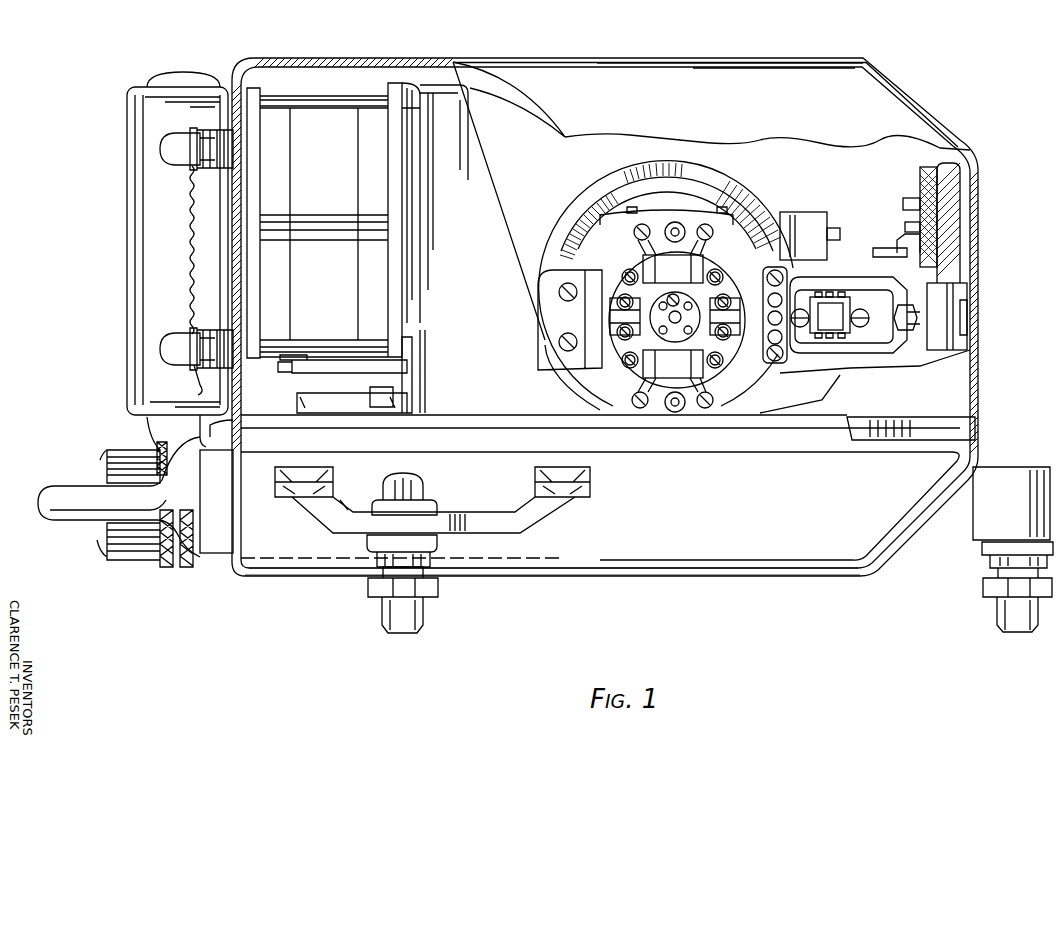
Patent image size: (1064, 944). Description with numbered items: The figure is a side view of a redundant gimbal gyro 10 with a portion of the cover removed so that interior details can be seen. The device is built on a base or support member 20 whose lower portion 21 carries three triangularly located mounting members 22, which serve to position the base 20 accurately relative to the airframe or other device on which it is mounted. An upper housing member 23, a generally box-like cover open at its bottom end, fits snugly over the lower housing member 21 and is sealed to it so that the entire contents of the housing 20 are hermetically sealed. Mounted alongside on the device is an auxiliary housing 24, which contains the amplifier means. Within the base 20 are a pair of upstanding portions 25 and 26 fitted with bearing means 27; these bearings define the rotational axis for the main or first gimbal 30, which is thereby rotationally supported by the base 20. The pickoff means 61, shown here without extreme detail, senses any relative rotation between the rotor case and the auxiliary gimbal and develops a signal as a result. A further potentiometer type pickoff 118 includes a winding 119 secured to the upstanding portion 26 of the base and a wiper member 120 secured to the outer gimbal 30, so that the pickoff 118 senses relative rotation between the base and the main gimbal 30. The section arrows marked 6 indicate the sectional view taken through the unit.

The redundant gimbal gyro 10 is at (50, 130).
The base or support member 20 is at (576, 601).
The lower portion 21 is at (793, 575).
The mounting members 22 is at (521, 537).
The upper housing member 23 is at (349, 59).
The auxiliary housing 24 is at (172, 213).
The upstanding portion 25 is at (505, 214).
The upstanding portion 26 is at (937, 165).
The bearing means 27 is at (937, 297).
The main or first gimbal 30 is at (698, 317).
The pickoff means 61 is at (820, 203).
The potentiometer type pickoff 118 is at (900, 208).
The winding 119 is at (923, 232).
The wiper member 120 is at (908, 232).
The section line 6- 6 is at (273, 510).